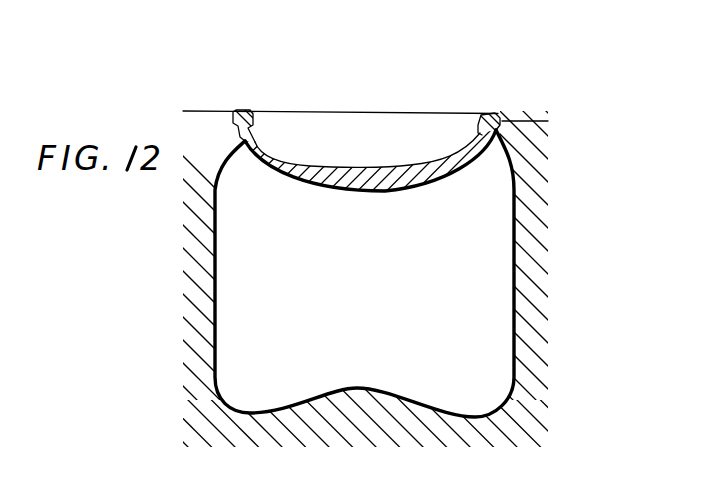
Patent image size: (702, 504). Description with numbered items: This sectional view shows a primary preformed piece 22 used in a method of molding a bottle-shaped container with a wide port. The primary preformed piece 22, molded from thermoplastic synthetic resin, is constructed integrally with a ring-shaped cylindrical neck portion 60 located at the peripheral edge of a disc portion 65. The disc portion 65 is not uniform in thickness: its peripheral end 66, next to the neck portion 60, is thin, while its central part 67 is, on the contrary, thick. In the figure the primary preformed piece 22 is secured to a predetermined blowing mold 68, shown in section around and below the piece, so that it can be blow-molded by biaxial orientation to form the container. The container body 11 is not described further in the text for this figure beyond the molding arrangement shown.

The container body 11 is at (351, 296).
The primary preformed piece 22 is at (374, 149).
The ring-shaped cylindrical neck portion 60 is at (495, 114).
The disc portion 65 is at (260, 175).
The peripheral end 66 is at (255, 143).
The central part 67 is at (375, 193).
The blowing mold 68 is at (190, 245).